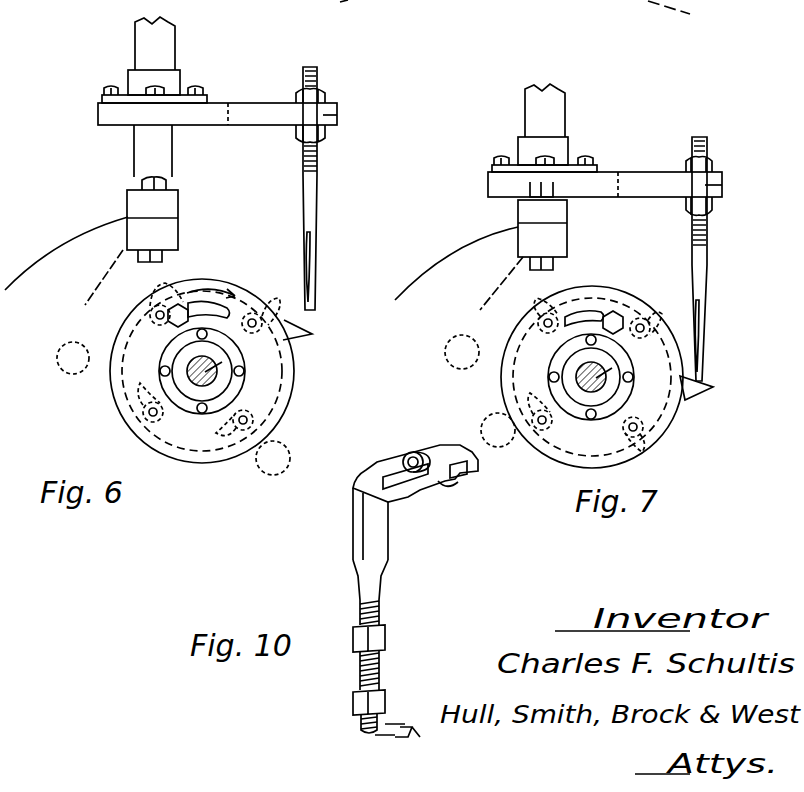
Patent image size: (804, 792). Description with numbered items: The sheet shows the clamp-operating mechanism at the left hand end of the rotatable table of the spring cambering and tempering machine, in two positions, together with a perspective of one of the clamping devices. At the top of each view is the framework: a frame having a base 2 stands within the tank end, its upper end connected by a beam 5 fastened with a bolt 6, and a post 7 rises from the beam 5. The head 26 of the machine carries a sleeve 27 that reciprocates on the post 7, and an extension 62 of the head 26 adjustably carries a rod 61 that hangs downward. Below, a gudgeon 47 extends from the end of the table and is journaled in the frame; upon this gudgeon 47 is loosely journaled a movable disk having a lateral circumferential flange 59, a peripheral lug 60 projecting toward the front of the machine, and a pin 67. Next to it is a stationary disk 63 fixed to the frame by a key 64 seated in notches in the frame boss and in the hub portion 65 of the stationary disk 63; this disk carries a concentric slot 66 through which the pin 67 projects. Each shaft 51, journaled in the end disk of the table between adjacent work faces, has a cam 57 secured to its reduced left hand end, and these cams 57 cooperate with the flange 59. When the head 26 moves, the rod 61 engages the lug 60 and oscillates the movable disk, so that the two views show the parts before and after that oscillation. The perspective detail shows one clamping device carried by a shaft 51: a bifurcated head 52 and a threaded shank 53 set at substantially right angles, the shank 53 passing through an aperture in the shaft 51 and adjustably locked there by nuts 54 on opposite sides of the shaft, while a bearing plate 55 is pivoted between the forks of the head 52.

In FIG. 6, the base 2 is at (92, 230).
In FIG. 7, the base 2 is at (471, 245).
In FIG. 6, the beam 5 is at (168, 204).
In FIG. 7, the beam 5 is at (560, 213).
In FIG. 6, the bolt 6 is at (157, 186).
In FIG. 7, the bolt 6 is at (553, 192).
In FIG. 6, the post 7 is at (165, 48).
In FIG. 7, the post 7 is at (555, 108).
In FIG. 6, the head 26 is at (212, 108).
In FIG. 7, the head 26 is at (600, 182).
In FIG. 6, the sleeve 27 is at (168, 80).
In FIG. 7, the sleeve 27 is at (565, 150).
In FIG. 6, the gudgeon 47 is at (203, 377).
In FIG. 7, the gudgeon 47 is at (592, 385).
In FIG. 6, the shaft 51 is at (243, 422).
In FIG. 7, the shaft 51 is at (538, 421).
In FIG. 10, the bifurcated head 52 is at (393, 457).
In FIG. 10, the threaded shank 53 is at (379, 612).
In FIG. 10, the nut 54 is at (380, 692).
In FIG. 10, the bearing plate 55 is at (470, 465).
In FIG. 6, the cam 57 is at (158, 287).
In FIG. 7, the cam 57 is at (650, 318).
In FIG. 6, the lateral circumferential flange 59 is at (120, 349).
In FIG. 7, the lateral circumferential flange 59 is at (513, 355).
In FIG. 6, the peripheral lug 60 is at (305, 332).
In FIG. 7, the peripheral lug 60 is at (713, 387).
In FIG. 6, the rod 61 is at (311, 192).
In FIG. 7, the rod 61 is at (699, 263).
In FIG. 6, the extension 62 is at (337, 115).
In FIG. 7, the extension 62 is at (722, 185).
In FIG. 6, the stationary disk 63 is at (272, 390).
In FIG. 7, the stationary disk 63 is at (520, 378).
In FIG. 6, the key 64 is at (215, 351).
In FIG. 7, the key 64 is at (608, 353).
In FIG. 6, the hub portion 65 is at (222, 362).
In FIG. 7, the hub portion 65 is at (612, 368).
In FIG. 6, the concentric slot 66 is at (231, 288).
In FIG. 7, the concentric slot 66 is at (585, 312).
In FIG. 6, the pin 67 is at (180, 304).
In FIG. 7, the pin 67 is at (617, 311).